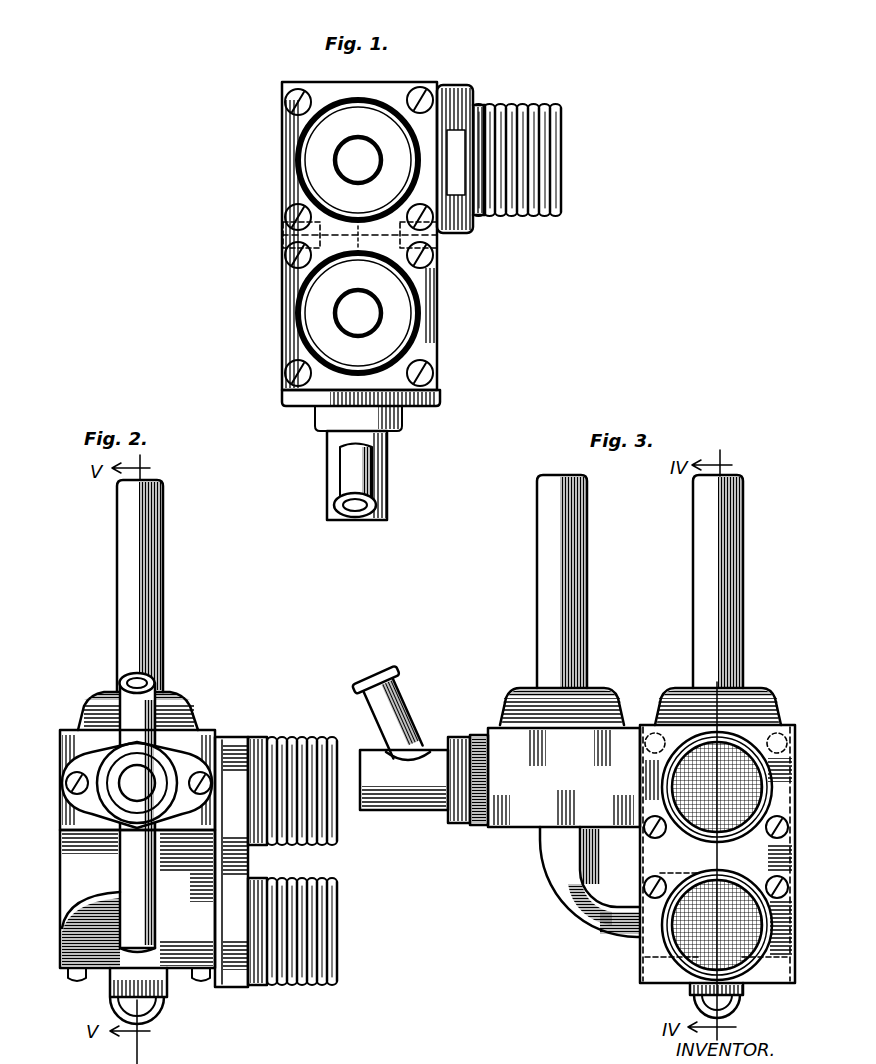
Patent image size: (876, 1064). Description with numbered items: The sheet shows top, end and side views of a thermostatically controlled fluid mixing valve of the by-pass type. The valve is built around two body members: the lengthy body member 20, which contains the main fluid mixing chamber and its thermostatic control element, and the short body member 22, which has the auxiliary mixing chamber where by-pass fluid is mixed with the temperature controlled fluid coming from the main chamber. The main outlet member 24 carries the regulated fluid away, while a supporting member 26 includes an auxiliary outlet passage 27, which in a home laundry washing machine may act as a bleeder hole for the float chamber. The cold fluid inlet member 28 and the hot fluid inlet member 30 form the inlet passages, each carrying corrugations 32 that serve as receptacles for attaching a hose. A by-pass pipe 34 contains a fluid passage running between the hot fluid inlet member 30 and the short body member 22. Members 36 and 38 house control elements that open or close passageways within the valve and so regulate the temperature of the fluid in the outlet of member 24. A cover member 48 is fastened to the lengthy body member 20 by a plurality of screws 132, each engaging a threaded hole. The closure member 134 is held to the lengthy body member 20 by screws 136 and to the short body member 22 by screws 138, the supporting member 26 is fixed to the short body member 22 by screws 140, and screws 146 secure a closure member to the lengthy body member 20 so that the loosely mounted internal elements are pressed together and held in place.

In FIG. 1, the lengthy body member 20 is at (283, 118).
In FIG. 2, the lengthy body member 20 is at (70, 864).
In FIG. 3, the lengthy body member 20 is at (796, 726).
In FIG. 1, the short body member 22 is at (284, 290).
In FIG. 2, the short body member 22 is at (62, 742).
In FIG. 3, the short body member 22 is at (500, 742).
In FIG. 1, the main outlet member 24 is at (386, 480).
In FIG. 2, the main outlet member 24 is at (124, 690).
In FIG. 3, the main outlet member 24 is at (366, 696).
In FIG. 1, the supporting member 26 is at (330, 487).
In FIG. 2, the supporting member 26 is at (116, 778).
In FIG. 3, the supporting member 26 is at (395, 802).
In FIG. 2, the auxiliary outlet passage 27 is at (150, 778).
In FIG. 1, the cold fluid inlet member 28 is at (561, 146).
In FIG. 2, the cold fluid inlet member 28 is at (282, 738).
In FIG. 3, the cold fluid inlet member 28 is at (790, 742).
In FIG. 2, the hot fluid inlet member 30 is at (284, 986).
In FIG. 3, the hot fluid inlet member 30 is at (672, 946).
In FIG. 1, the corrugations 32 is at (532, 108).
In FIG. 2, the corrugations 32 is at (302, 878).
In FIG. 2, the by-pass pipe 34 is at (72, 904).
In FIG. 3, the by-pass pipe 34 is at (546, 880).
In FIG. 1, the control element member 36 is at (355, 160).
In FIG. 3, the control element member 36 is at (745, 554).
In FIG. 1, the control element member 38 is at (372, 313).
In FIG. 2, the control element member 38 is at (164, 570).
In FIG. 3, the control element member 38 is at (588, 578).
In FIG. 3, the cover member 48 is at (772, 787).
In FIG. 3, the screws 132 is at (650, 832).
In FIG. 1, the closure member 134 is at (432, 288).
In FIG. 2, the closure member 134 is at (188, 696).
In FIG. 3, the closure member 134 is at (620, 696).
In FIG. 1, the screws 136 is at (296, 100).
In FIG. 1, the screws 138 is at (298, 255).
In FIG. 2, the screws 140 is at (66, 784).
In FIG. 2, the screws 146 is at (78, 986).